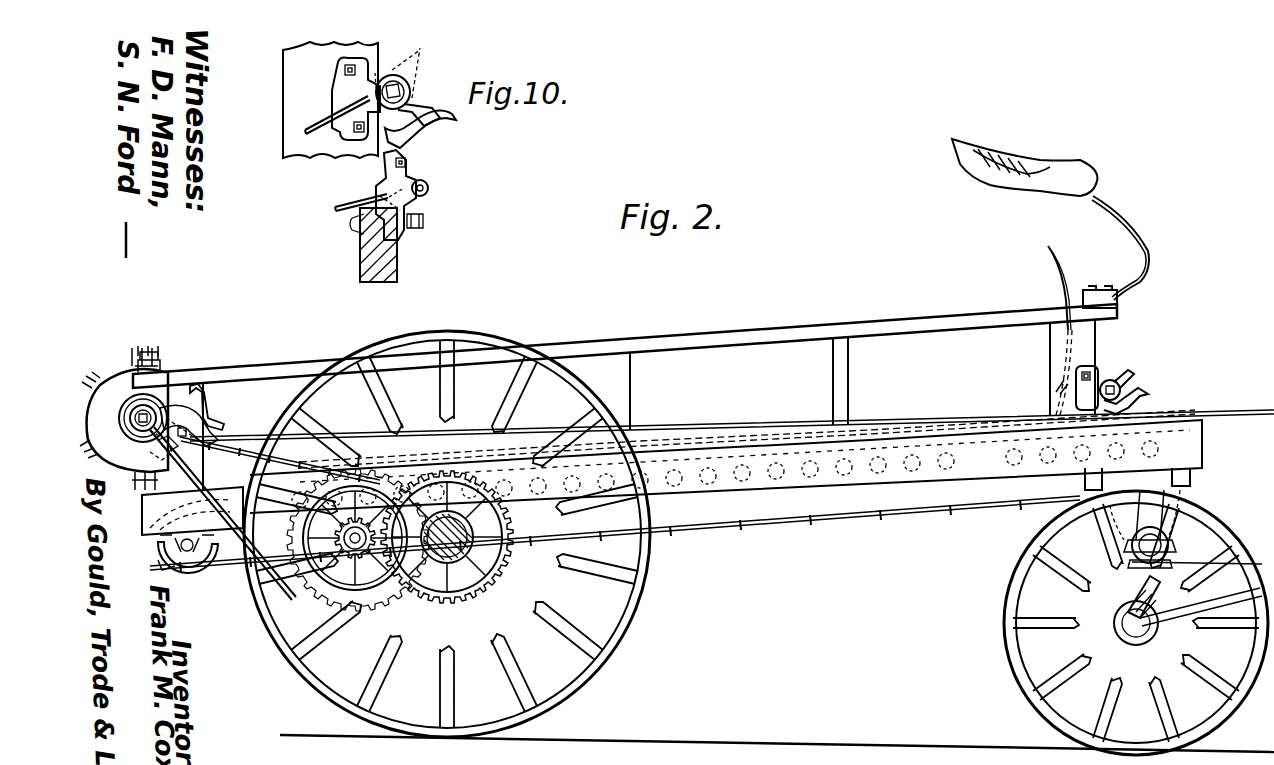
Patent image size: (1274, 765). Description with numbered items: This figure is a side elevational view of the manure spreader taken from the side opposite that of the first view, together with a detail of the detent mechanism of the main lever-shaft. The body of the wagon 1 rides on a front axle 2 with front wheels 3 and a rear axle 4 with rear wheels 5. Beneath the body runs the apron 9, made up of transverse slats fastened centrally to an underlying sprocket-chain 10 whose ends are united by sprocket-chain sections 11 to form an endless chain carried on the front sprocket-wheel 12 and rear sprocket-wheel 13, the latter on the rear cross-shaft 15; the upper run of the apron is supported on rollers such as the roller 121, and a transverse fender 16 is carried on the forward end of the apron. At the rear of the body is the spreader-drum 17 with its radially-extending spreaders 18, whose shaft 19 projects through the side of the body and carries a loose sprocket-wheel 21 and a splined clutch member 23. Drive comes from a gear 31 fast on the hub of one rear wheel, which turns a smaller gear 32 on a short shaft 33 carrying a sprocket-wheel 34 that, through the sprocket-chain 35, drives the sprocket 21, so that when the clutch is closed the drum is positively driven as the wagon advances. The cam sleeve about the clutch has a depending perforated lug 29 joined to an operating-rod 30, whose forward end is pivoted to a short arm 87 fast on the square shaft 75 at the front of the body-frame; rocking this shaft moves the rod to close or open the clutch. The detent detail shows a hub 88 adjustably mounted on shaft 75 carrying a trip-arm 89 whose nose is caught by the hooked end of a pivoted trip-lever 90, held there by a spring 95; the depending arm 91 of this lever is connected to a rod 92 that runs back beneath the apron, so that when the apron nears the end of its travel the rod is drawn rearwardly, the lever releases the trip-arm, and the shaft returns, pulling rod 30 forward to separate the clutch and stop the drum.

In FIG. 2, the body of the wagon 1 is at (718, 335).
In FIG. 2, the front axle 2 is at (1114, 616).
In FIG. 2, the front wheels 3 is at (1004, 604).
In FIG. 2, the rear axle 4 is at (505, 534).
In FIG. 2, the rear wheels 5 is at (646, 592).
In FIG. 2, the apron 9 is at (910, 436).
In FIG. 2, the sprocket-chain 10 is at (836, 462).
In FIG. 2, the sprocket-chain section 11 is at (790, 512).
In FIG. 2, the front sprocket-wheel 12 is at (1173, 517).
In FIG. 2, the rear sprocket-wheel 13 is at (200, 565).
In FIG. 2, the cross-shaft 15 is at (188, 554).
In FIG. 2, the fender 16 is at (1065, 276).
In FIG. 2, the spreader-drum 17 is at (116, 378).
In FIG. 2, the spreaders 18 is at (162, 360).
In FIG. 2, the shaft of the drum 19 is at (187, 422).
In FIG. 2, the sprocket-wheel 21 is at (126, 414).
In FIG. 2, the clutch member 23 is at (132, 424).
In FIG. 2, the perforated lug 29 is at (160, 440).
In FIG. 10, the operating-rod 30 is at (337, 124).
In FIG. 2, the operating-rod 30 is at (771, 426).
In FIG. 2, the gear 31 is at (466, 602).
In FIG. 2, the smaller gear 32 is at (355, 552).
In FIG. 2, the short shaft 33 is at (308, 600).
In FIG. 2, the sprocket-wheel 34 is at (292, 516).
In FIG. 2, the sprocket-chain 35 is at (330, 468).
In FIG. 10, the square shaft 75 is at (404, 90).
In FIG. 2, the square shaft 75 is at (1076, 390).
In FIG. 10, the short arm 87 is at (356, 99).
In FIG. 2, the short arm 87 is at (1118, 396).
In FIG. 10, the hub 88 is at (393, 72).
In FIG. 10, the trip-arm 89 is at (426, 112).
In FIG. 2, the trip-arm 89 is at (1134, 370).
In FIG. 10, the trip-lever 90 is at (444, 140).
In FIG. 2, the trip-lever 90 is at (1146, 404).
In FIG. 10, the depending arm 91 is at (430, 188).
In FIG. 10, the rod 92 is at (357, 196).
In FIG. 10, the spring 95 is at (388, 184).
In FIG. 2, the roller 121 is at (725, 474).